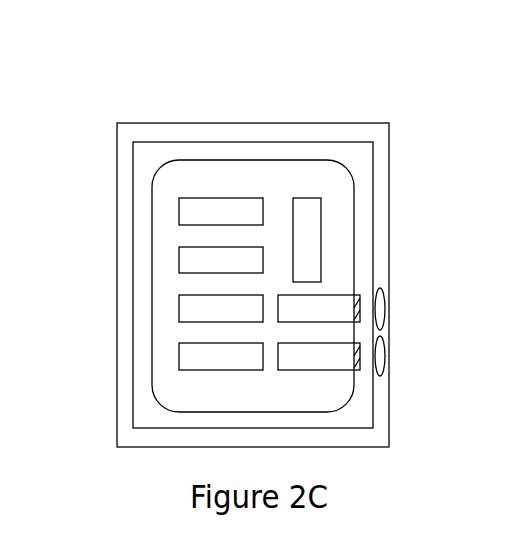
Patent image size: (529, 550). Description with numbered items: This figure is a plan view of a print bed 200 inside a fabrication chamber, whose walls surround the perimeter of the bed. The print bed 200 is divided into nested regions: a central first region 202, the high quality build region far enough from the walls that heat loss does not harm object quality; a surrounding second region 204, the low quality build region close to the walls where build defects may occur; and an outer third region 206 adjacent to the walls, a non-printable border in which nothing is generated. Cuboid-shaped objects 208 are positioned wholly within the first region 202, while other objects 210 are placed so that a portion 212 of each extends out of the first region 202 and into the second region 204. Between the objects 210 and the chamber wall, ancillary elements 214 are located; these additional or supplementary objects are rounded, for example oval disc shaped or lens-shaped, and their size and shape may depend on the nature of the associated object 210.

The print bed 200 is at (143, 93).
The first region 202 is at (274, 177).
The second region 204 is at (249, 152).
The third region 206 is at (202, 128).
The objects 208 is at (179, 202).
The objects 210 is at (321, 217).
The portion 212 is at (358, 295).
The ancillary elements 214 is at (388, 303).